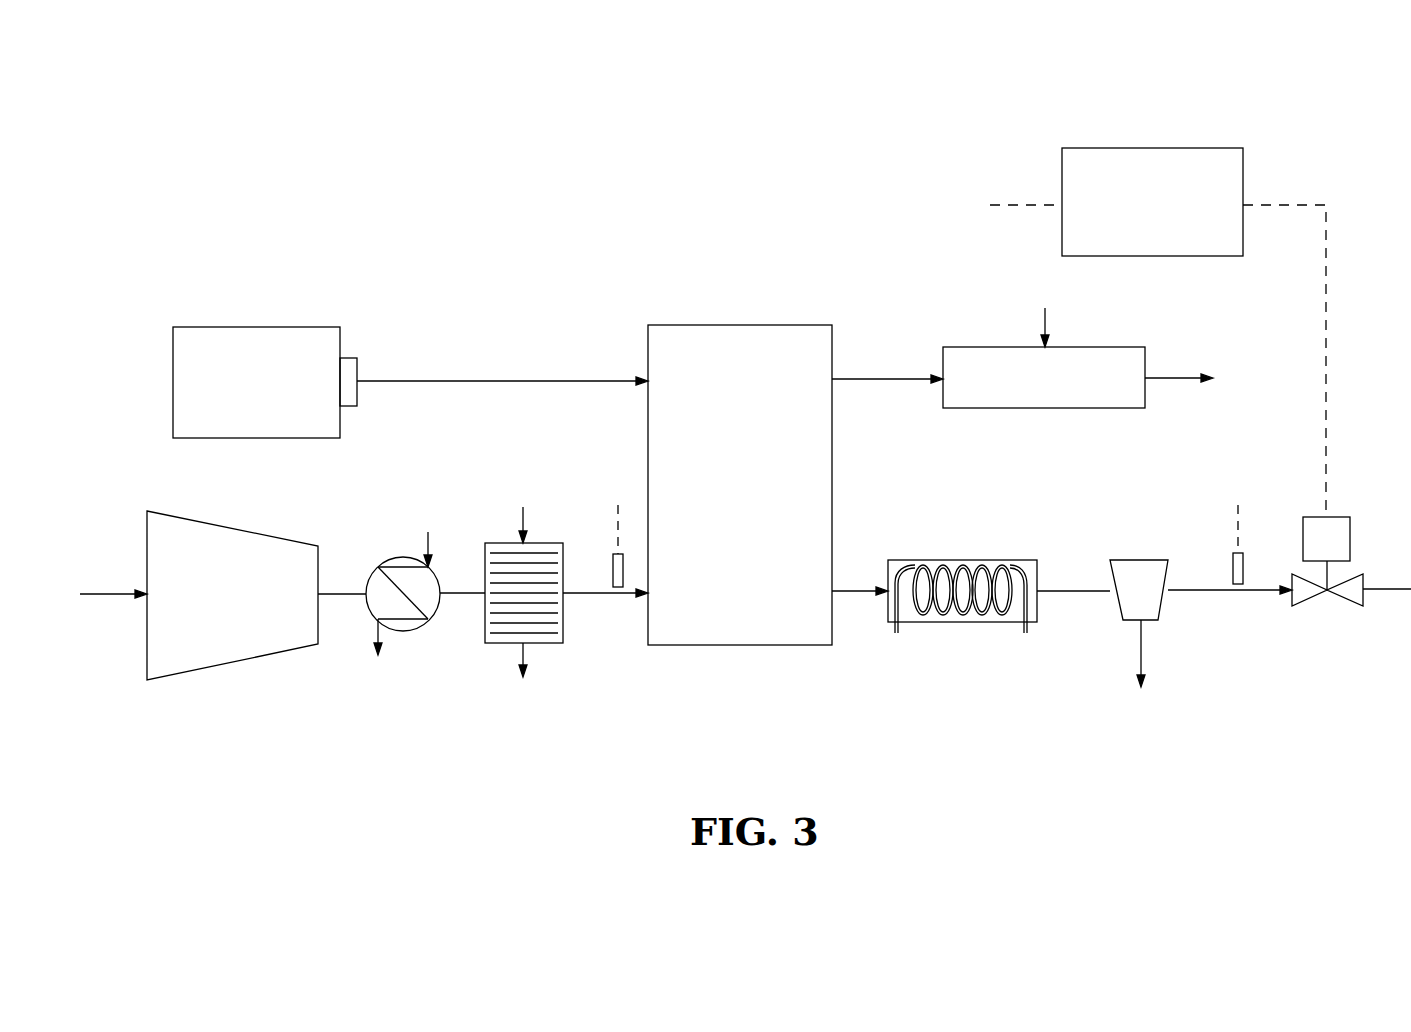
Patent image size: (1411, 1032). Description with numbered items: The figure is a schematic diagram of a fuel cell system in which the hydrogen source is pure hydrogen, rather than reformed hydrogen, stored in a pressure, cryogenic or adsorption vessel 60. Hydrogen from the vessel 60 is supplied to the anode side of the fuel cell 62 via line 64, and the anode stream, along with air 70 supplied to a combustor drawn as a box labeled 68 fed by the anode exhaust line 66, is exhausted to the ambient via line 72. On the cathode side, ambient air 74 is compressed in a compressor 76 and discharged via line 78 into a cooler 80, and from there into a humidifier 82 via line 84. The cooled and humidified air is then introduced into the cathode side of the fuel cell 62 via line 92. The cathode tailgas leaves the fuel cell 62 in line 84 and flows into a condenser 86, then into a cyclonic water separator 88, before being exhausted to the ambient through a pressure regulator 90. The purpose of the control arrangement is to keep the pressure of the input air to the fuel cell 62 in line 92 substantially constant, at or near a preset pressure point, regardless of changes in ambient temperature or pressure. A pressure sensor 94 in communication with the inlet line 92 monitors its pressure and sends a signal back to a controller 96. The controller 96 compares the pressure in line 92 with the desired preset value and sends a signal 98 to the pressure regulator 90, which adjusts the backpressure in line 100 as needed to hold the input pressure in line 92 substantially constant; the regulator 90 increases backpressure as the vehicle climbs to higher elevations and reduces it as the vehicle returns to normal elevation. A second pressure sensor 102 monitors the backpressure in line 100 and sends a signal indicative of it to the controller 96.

The vessel 60 is at (307, 335).
The fuel cell 62 is at (737, 335).
The line 64 is at (478, 381).
The anode exhaust line 66 is at (887, 375).
The combuster 68 is at (1133, 355).
The air 70 is at (1045, 320).
The line 72 is at (1180, 375).
The ambient air 74 is at (103, 595).
The compressor 76 is at (269, 542).
The line 78 is at (340, 589).
The cooler 80 is at (402, 563).
The humidifier 82 is at (498, 545).
The line 84 is at (458, 588).
The condenser 86 is at (960, 562).
The cyclonic water separator 88 is at (1138, 567).
The pressure regulator 90 is at (1327, 605).
The line 92 is at (583, 597).
The pressure sensor 94 is at (613, 565).
The controller 96 is at (1180, 158).
The signal 98 is at (1328, 283).
The line 100 is at (1190, 588).
The pressure sensor 102 is at (1243, 566).